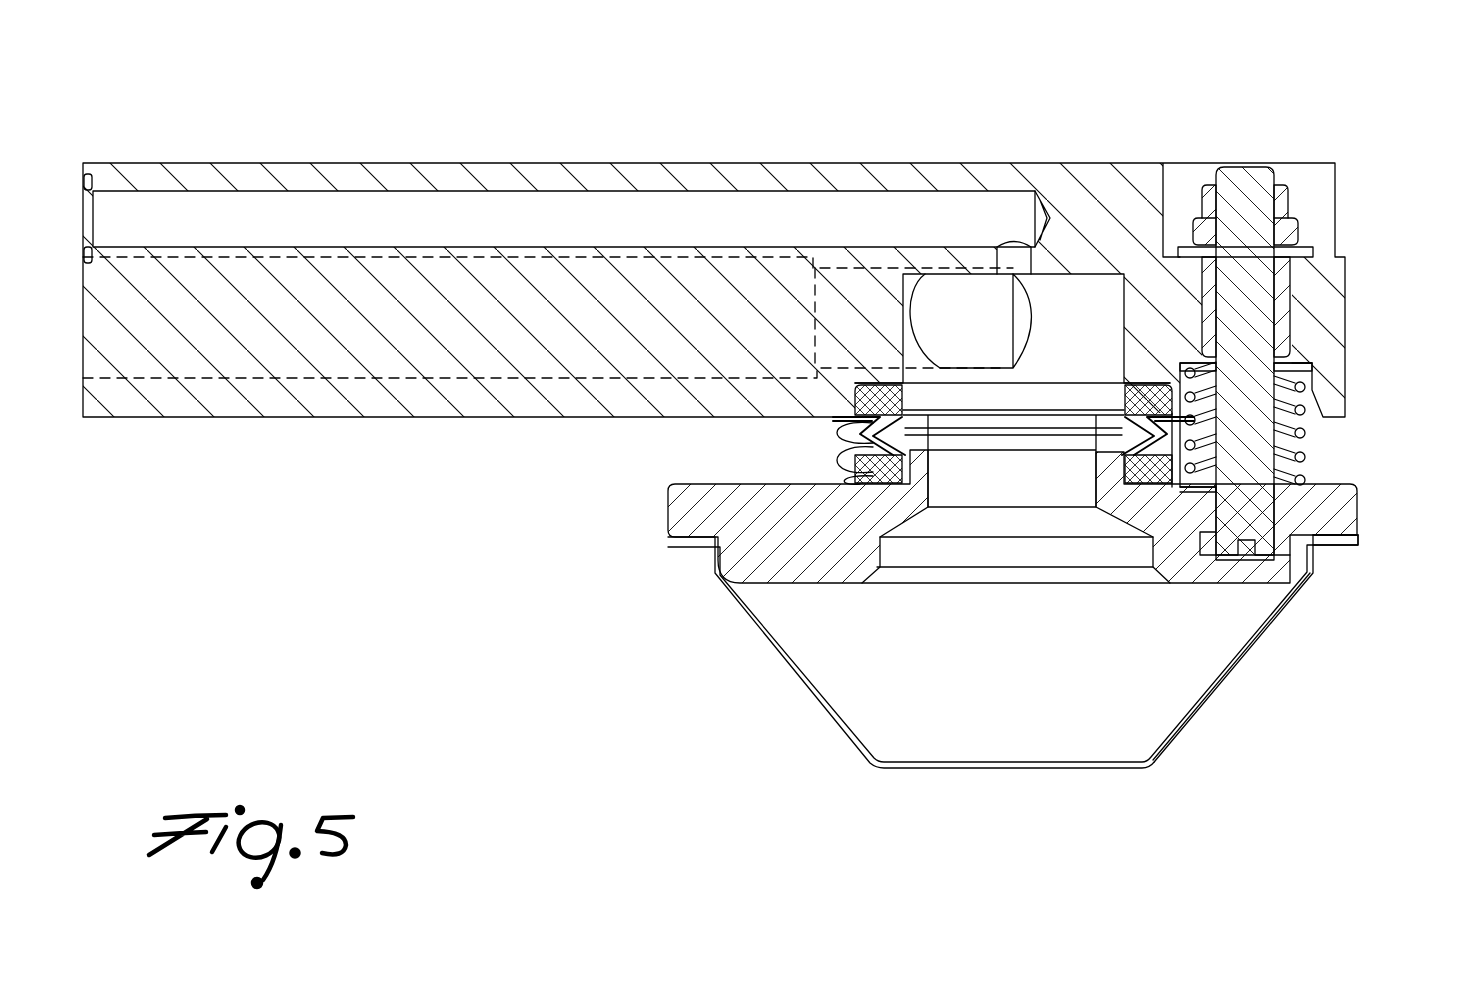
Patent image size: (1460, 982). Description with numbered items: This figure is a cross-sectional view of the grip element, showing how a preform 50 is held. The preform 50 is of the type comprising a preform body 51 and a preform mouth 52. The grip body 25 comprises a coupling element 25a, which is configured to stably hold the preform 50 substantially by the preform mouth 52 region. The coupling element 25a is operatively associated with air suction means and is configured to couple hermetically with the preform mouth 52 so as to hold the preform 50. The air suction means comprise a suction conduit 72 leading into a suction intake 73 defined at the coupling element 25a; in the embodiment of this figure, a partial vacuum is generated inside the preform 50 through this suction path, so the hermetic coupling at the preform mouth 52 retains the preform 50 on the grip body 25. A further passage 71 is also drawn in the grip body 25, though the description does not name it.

The grip body 25 is at (203, 152).
The coupling element 25a is at (1374, 464).
The preform 50 is at (1285, 646).
The preform body 51 is at (1193, 718).
The preform mouth 52 is at (1316, 562).
The channel 71 is at (698, 220).
The suction conduit 72 is at (963, 327).
The suction intake 73 is at (912, 513).